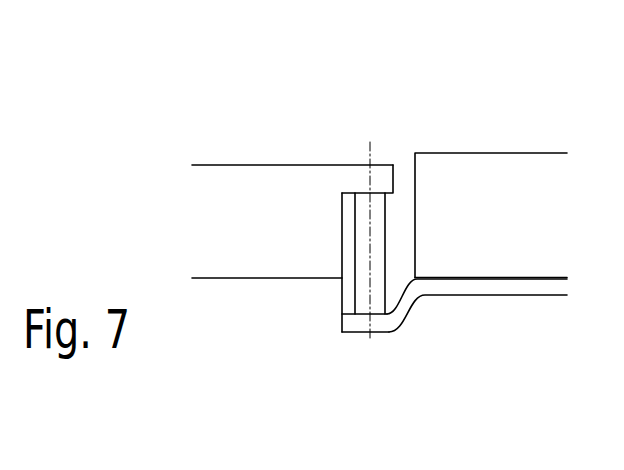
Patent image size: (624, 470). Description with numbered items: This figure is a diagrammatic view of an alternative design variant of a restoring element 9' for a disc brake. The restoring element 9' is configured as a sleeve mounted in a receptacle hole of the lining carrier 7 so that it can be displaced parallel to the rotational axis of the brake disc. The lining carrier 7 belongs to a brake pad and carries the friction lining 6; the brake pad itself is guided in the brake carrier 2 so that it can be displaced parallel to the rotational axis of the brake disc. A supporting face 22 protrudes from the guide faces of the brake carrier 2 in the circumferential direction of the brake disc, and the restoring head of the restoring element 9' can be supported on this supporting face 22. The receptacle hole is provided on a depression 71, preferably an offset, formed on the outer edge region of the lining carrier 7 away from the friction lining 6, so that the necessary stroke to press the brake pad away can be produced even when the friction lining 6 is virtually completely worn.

The brake carrier 2 is at (252, 192).
The supporting face 22 is at (382, 168).
The restoring element 9' is at (297, 265).
The depression 71 is at (380, 323).
The friction lining 6 is at (497, 168).
The lining carrier 7 is at (510, 285).